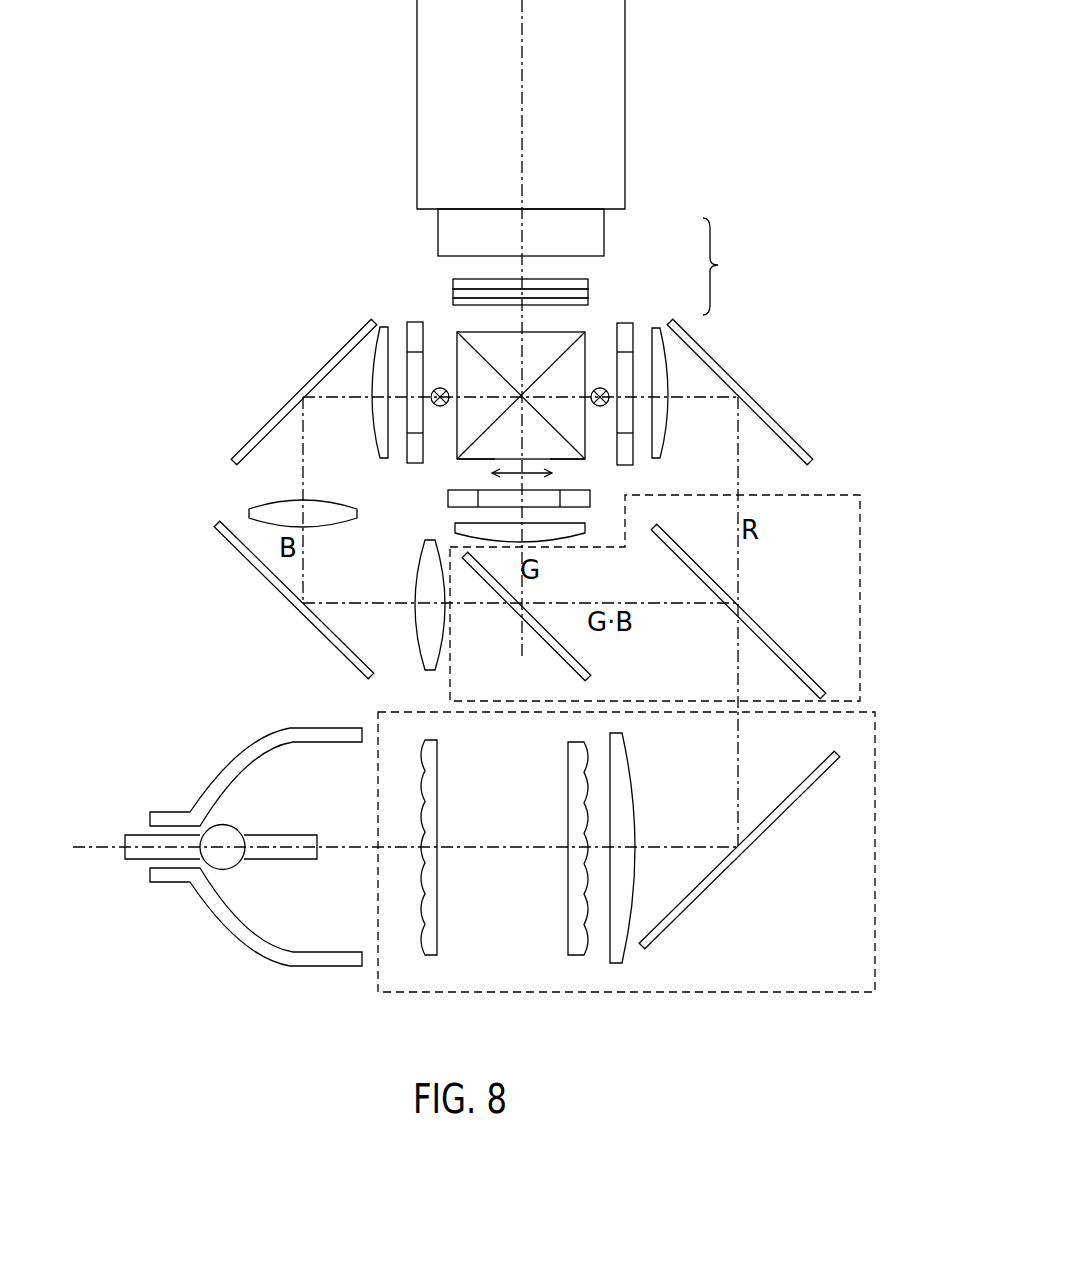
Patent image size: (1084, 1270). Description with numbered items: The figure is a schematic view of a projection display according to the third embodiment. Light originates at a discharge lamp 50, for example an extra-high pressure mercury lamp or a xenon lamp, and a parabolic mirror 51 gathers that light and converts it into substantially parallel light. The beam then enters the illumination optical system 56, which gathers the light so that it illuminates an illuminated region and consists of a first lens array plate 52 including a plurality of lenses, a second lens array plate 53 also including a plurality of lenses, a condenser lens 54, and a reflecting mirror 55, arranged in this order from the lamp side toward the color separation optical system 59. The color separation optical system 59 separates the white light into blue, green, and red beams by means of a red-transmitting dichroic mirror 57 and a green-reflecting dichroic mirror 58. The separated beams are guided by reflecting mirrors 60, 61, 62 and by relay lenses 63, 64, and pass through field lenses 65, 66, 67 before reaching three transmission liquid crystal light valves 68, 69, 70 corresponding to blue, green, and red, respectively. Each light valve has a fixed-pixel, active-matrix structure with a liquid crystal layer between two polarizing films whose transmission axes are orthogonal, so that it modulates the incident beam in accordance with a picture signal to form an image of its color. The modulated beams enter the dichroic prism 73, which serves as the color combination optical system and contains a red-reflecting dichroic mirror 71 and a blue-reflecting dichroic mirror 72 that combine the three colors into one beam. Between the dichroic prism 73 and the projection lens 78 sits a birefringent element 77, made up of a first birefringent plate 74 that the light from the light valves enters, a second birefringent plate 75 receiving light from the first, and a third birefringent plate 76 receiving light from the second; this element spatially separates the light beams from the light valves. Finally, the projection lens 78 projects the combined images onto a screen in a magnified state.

The discharge lamp 50 is at (138, 860).
The parabolic mirror 51 is at (238, 920).
The first lens array plate 52 is at (437, 772).
The second lens array plate 53 is at (568, 935).
The condenser lens 54 is at (632, 772).
The reflecting mirror 55 is at (782, 815).
The illumination optical system 56 is at (812, 992).
The red-transmitting dichroic mirror 57 is at (772, 632).
The green-reflecting dichroic mirror 58 is at (588, 666).
The color separation optical system 59 is at (850, 495).
The reflecting mirror 60 is at (748, 382).
The reflecting mirror 61 is at (262, 574).
The reflecting mirror 62 is at (326, 358).
The relay lens 63 is at (425, 662).
The relay lens 64 is at (342, 527).
The field lens 65 is at (580, 542).
The field lens 66 is at (668, 438).
The field lens 67 is at (372, 440).
The transmission liquid crystal light valve 68 is at (448, 500).
The transmission liquid crystal light valve 69 is at (630, 466).
The transmission liquid crystal light valve 70 is at (415, 322).
The red-reflecting dichroic mirror 71 is at (572, 446).
The blue-reflecting dichroic mirror 72 is at (460, 460).
The dichroic prism 73 is at (565, 460).
The first birefringent plate 74 is at (588, 302).
The second birefringent plate 75 is at (588, 292).
The third birefringent plate 76 is at (588, 282).
The birefringent element 77 is at (730, 266).
The projection lens 78 is at (625, 52).